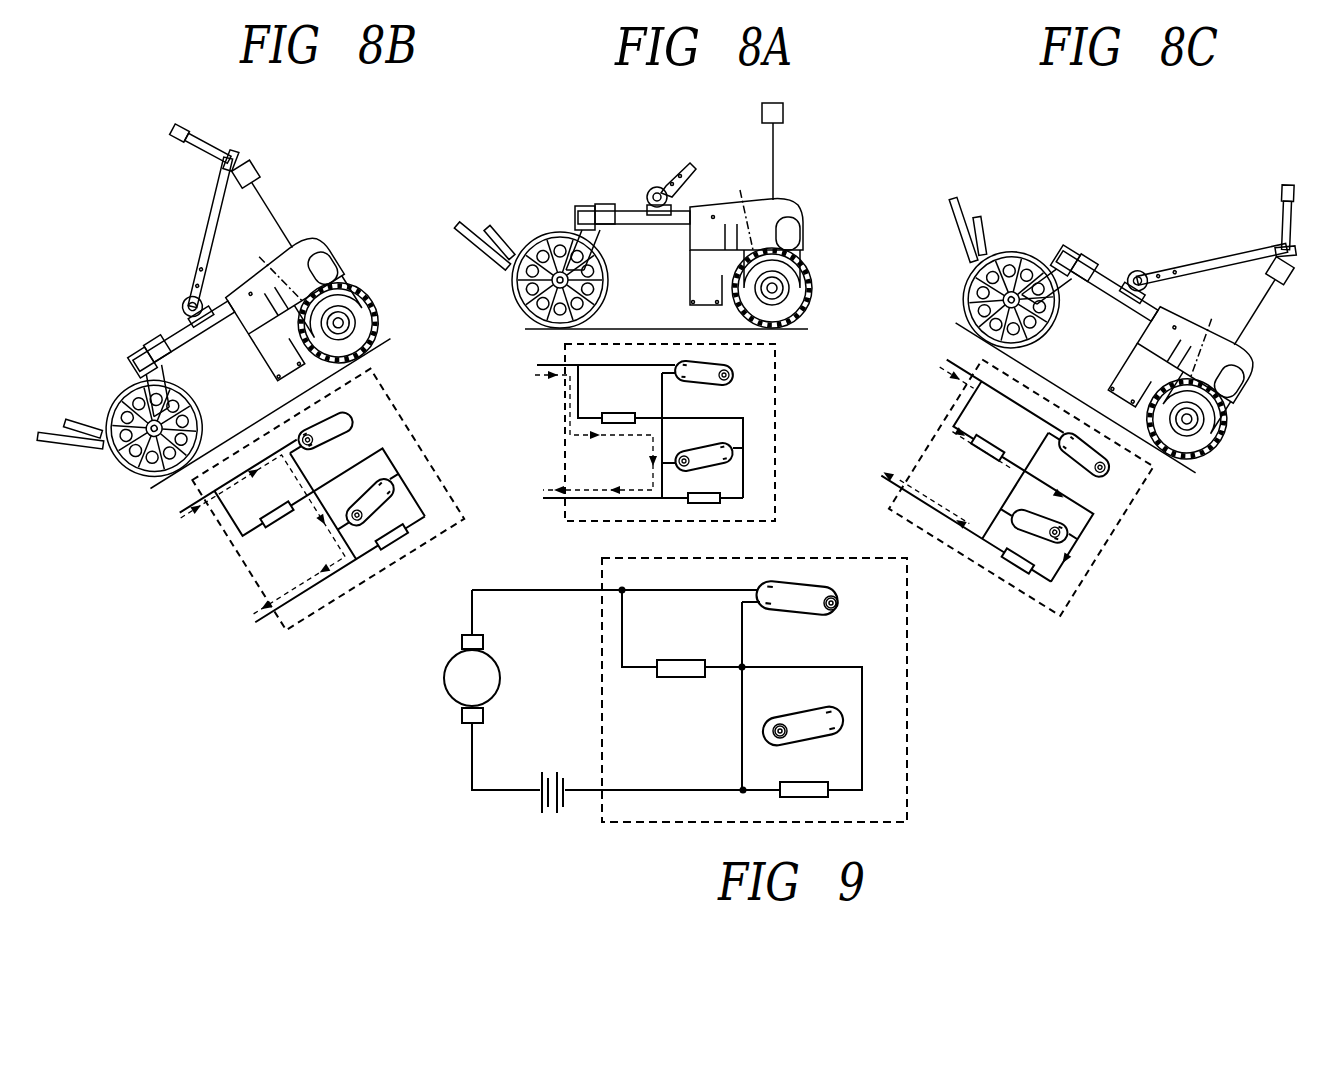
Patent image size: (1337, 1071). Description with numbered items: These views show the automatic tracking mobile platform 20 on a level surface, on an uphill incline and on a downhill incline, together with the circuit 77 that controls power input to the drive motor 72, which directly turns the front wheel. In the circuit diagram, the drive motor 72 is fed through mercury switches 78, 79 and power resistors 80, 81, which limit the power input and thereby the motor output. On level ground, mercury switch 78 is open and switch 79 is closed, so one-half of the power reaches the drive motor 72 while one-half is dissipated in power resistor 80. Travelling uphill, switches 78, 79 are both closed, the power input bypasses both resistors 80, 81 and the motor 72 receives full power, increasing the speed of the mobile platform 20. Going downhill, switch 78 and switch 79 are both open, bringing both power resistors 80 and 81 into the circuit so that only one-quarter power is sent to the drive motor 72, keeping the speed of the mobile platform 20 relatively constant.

In FIG. 8A, the mobile platform 20 is at (620, 194).
In FIG. 8B, the mobile platform 20 is at (166, 323).
In FIG. 8C, the mobile platform 20 is at (1120, 264).
In FIG. 9, the drive motor 72 is at (472, 679).
In FIG. 9, the circuit 77 is at (592, 573).
In FIG. 8A, the mercury switch 78 is at (722, 368).
In FIG. 8B, the mercury switch 78 is at (333, 414).
In FIG. 8C, the mercury switch 78 is at (1101, 457).
In FIG. 9, the mercury switch 78 is at (807, 592).
In FIG. 8A, the mercury switch 79 is at (700, 455).
In FIG. 8B, the mercury switch 79 is at (362, 497).
In FIG. 8C, the mercury switch 79 is at (1042, 518).
In FIG. 9, the mercury switch 79 is at (796, 711).
In FIG. 8A, the power resistor 80 is at (618, 386).
In FIG. 8B, the power resistor 80 is at (279, 507).
In FIG. 8C, the power resistor 80 is at (991, 428).
In FIG. 9, the power resistor 80 is at (678, 660).
In FIG. 8A, the power resistor 81 is at (700, 492).
In FIG. 8B, the power resistor 81 is at (388, 537).
In FIG. 8C, the power resistor 81 is at (1032, 551).
In FIG. 9, the power resistor 81 is at (805, 782).